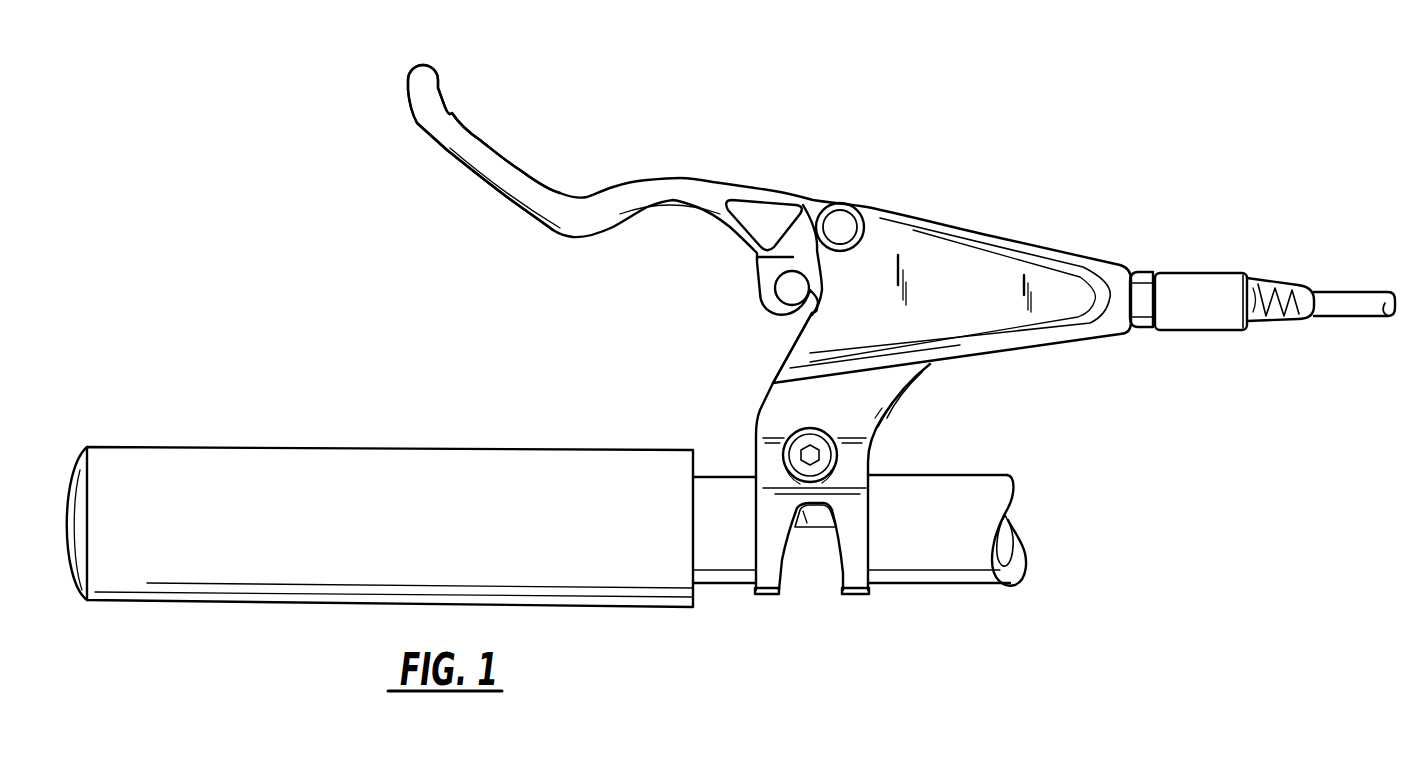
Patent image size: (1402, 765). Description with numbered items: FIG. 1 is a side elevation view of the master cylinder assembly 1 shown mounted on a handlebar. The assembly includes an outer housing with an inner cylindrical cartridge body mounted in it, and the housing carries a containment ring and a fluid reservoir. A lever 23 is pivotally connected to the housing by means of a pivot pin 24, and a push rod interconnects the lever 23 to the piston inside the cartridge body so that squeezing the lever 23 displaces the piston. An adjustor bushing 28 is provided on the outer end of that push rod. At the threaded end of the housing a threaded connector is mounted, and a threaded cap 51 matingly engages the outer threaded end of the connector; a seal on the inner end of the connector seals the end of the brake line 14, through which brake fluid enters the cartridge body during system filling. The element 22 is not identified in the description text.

The brake lever assembly 1 is at (771, 129).
The brake cable 14 is at (1362, 291).
The lever body 22 is at (1037, 239).
The lever blade 23 is at (497, 145).
The cable anchor hole 24 is at (843, 222).
The pivot hole 28 is at (786, 294).
The barrel adjuster 51 is at (1303, 264).